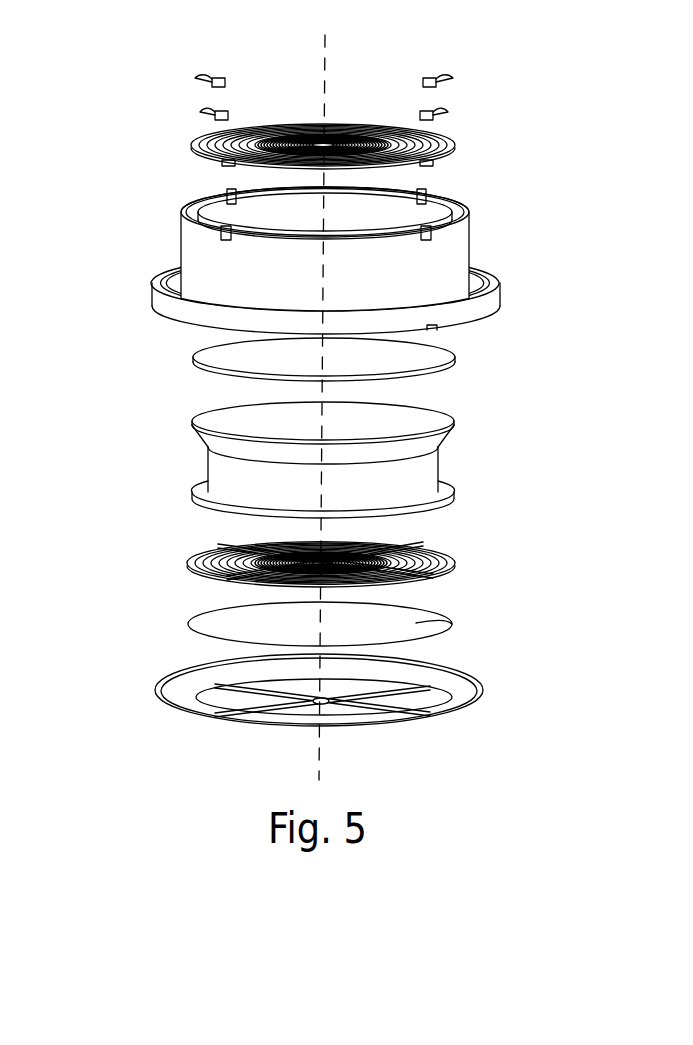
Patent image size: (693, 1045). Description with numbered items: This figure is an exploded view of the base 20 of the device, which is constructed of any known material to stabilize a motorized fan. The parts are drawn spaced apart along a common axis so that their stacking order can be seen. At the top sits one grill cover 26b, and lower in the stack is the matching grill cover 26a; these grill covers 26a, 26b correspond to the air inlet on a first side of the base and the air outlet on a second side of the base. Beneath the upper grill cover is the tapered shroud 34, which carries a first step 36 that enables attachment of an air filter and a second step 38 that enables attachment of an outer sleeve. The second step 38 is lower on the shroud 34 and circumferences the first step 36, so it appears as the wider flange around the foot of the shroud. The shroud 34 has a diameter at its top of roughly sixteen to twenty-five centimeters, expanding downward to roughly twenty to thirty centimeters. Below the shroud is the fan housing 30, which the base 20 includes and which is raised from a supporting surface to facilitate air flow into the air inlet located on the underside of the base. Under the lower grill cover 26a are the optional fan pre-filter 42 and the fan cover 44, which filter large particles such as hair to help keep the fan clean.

The base 20 is at (0, 357).
The grill cover 26a is at (448, 555).
The grill cover 26b is at (455, 139).
The fan housing 30 is at (438, 462).
The tapered shroud 34 is at (330, 228).
The first step 36 is at (183, 208).
The second step 38 is at (160, 275).
The fan pre-filter 42 is at (425, 620).
The fan cover 44 is at (486, 686).